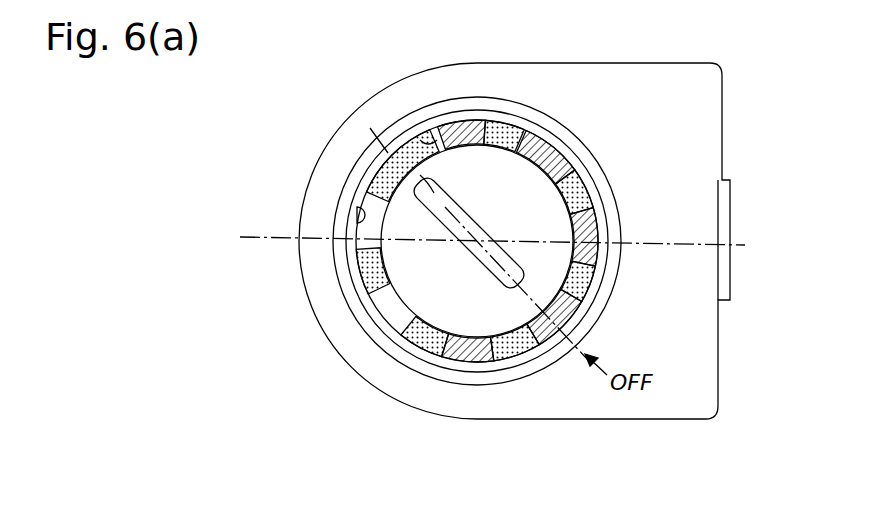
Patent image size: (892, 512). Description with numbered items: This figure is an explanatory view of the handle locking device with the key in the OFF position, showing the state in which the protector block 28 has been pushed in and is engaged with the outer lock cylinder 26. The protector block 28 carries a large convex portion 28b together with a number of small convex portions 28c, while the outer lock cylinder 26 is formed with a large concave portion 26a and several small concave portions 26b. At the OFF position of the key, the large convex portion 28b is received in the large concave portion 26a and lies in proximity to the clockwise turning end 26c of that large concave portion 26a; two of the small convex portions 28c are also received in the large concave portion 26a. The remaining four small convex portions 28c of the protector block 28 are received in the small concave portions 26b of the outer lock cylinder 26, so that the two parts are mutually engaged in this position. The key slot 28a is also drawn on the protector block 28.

The outer lock cylinder 26 is at (375, 160).
The large concave portion 26a is at (362, 212).
The small concave portions 26b is at (516, 132).
The clockwise turning end 26c is at (403, 140).
The protector block 28 is at (458, 163).
The key slot of rotor 28a is at (478, 262).
The large convex portion 28b is at (428, 187).
The small convex portions 28c is at (502, 132).